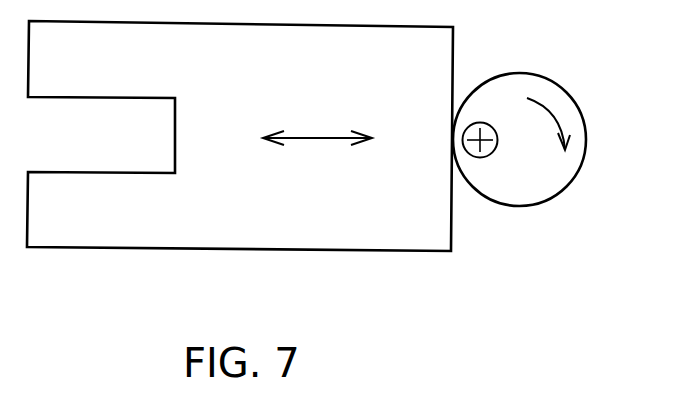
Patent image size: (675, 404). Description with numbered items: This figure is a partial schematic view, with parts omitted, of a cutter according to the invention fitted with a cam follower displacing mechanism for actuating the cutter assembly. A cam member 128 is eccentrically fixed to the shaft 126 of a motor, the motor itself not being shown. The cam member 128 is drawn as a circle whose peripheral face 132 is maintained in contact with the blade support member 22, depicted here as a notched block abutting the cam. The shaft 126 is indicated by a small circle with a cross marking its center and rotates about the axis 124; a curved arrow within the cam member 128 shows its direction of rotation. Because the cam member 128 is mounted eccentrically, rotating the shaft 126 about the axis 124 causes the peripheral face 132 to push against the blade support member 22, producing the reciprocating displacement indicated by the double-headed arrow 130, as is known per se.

The blade support member 22 is at (145, 240).
The axis 124 is at (480, 138).
The shaft 126 is at (488, 155).
The cam member 128 is at (555, 98).
The arrow 130 is at (322, 138).
The peripheral face 132 is at (558, 193).